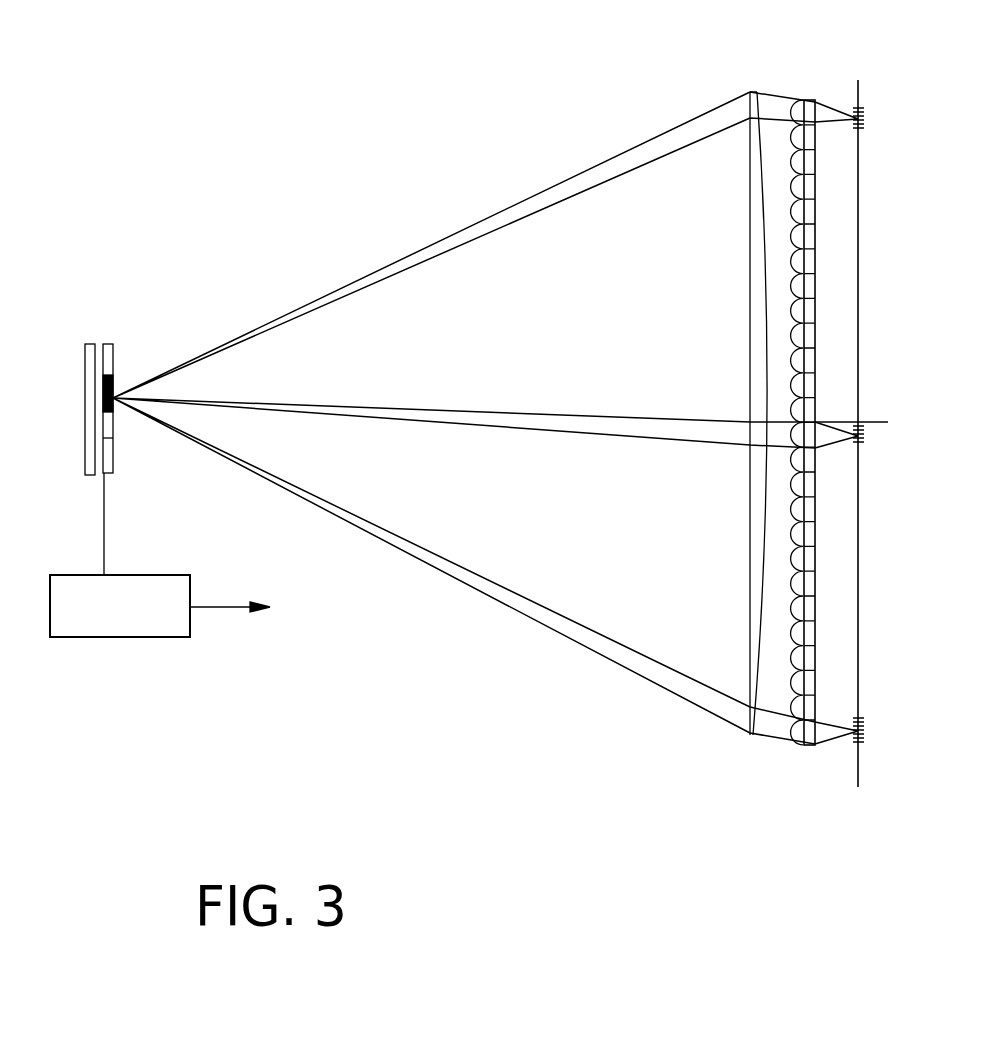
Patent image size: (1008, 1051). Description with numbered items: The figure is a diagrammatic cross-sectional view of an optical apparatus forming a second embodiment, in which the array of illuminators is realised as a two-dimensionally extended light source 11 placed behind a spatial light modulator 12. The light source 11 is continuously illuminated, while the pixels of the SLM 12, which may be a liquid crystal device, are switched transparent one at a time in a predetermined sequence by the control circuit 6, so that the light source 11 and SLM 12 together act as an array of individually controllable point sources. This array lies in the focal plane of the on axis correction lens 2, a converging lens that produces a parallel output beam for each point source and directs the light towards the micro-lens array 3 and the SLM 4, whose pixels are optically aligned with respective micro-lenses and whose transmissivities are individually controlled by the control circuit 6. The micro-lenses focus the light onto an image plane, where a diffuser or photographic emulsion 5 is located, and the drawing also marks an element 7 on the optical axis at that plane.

The light source 11 is at (85, 372).
The spatial light modulator 12 is at (113, 362).
The control circuit 6 is at (104, 637).
The on axis correction lens 2 is at (750, 670).
The micro-lens array 3 is at (790, 742).
The spatial light modulator 4 is at (809, 98).
The diffuser or photographic emulsion 5 is at (856, 760).
The optical axis 7 is at (866, 422).